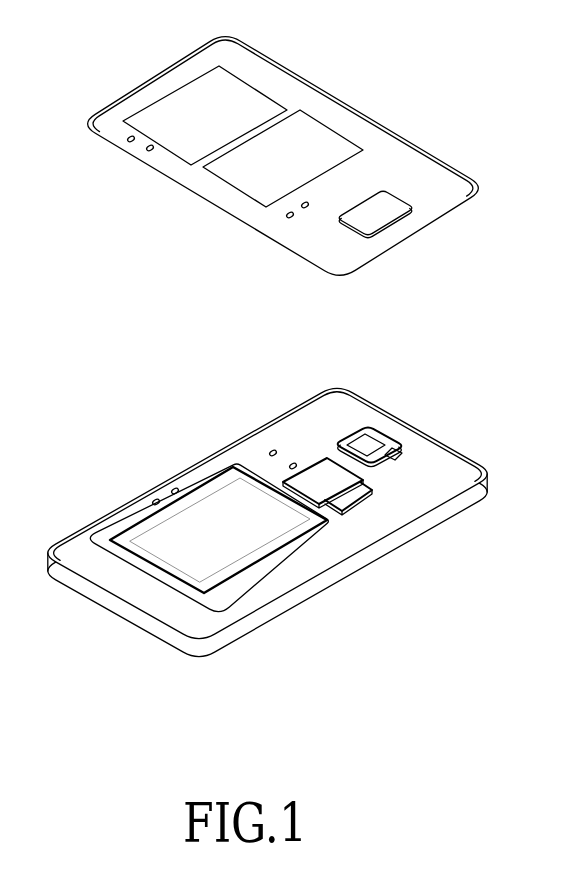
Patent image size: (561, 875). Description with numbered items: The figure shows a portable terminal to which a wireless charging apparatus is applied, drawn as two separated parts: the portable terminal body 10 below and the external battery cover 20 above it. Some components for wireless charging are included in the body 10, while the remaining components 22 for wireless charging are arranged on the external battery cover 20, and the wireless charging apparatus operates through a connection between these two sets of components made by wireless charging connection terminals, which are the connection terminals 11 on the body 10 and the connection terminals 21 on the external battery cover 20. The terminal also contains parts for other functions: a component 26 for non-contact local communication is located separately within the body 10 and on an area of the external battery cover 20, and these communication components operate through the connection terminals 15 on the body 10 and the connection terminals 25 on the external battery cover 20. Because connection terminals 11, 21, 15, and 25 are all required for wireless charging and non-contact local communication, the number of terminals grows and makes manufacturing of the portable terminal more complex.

The portable terminal body 10 is at (115, 614).
The connection terminals 11 is at (289, 467).
The connection terminals for non-contact local communication 15 is at (174, 488).
The external battery cover 20 is at (145, 83).
The connection terminals 21 is at (305, 209).
The components for wireless charging 22 is at (332, 130).
The connection terminals for non-contact local communication 25 is at (147, 150).
The component for non-contact local communication 26 is at (257, 92).